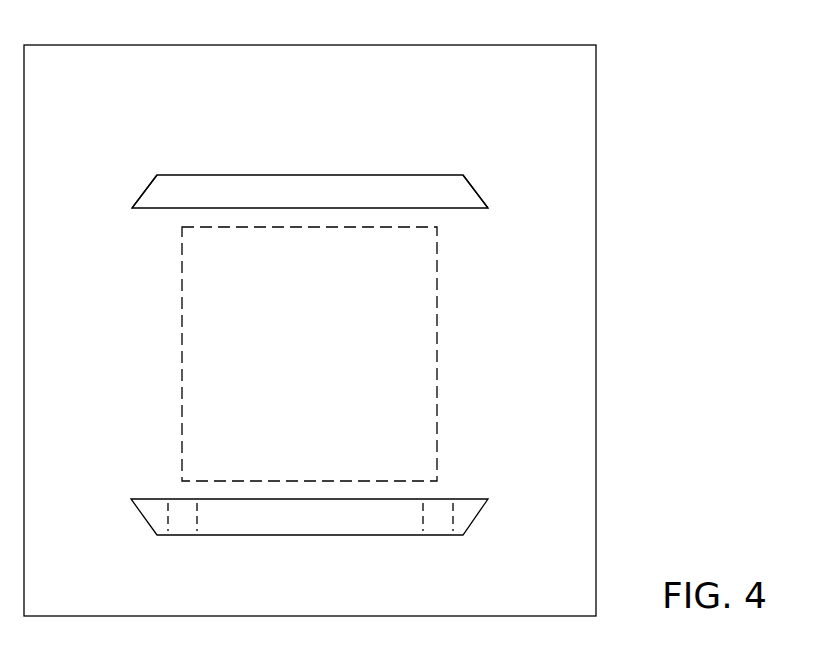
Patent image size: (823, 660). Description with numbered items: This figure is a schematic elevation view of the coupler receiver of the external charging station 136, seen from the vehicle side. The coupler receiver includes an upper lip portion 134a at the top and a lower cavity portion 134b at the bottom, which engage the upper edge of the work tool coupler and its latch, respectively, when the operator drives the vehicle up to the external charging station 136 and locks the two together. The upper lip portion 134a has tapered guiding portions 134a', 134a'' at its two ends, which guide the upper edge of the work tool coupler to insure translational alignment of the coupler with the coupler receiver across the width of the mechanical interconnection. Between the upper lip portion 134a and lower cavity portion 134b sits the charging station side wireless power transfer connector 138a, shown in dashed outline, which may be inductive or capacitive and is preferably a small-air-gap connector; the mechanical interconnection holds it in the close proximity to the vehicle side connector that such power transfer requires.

The external charging station 136 is at (621, 91).
The upper lip portion 134a is at (310, 157).
The tapered guiding portion 134a' is at (105, 227).
The tapered guiding portion 134a'' is at (508, 230).
The wireless power transfer connector 138a is at (440, 335).
The lower cavity portion 134b is at (480, 511).